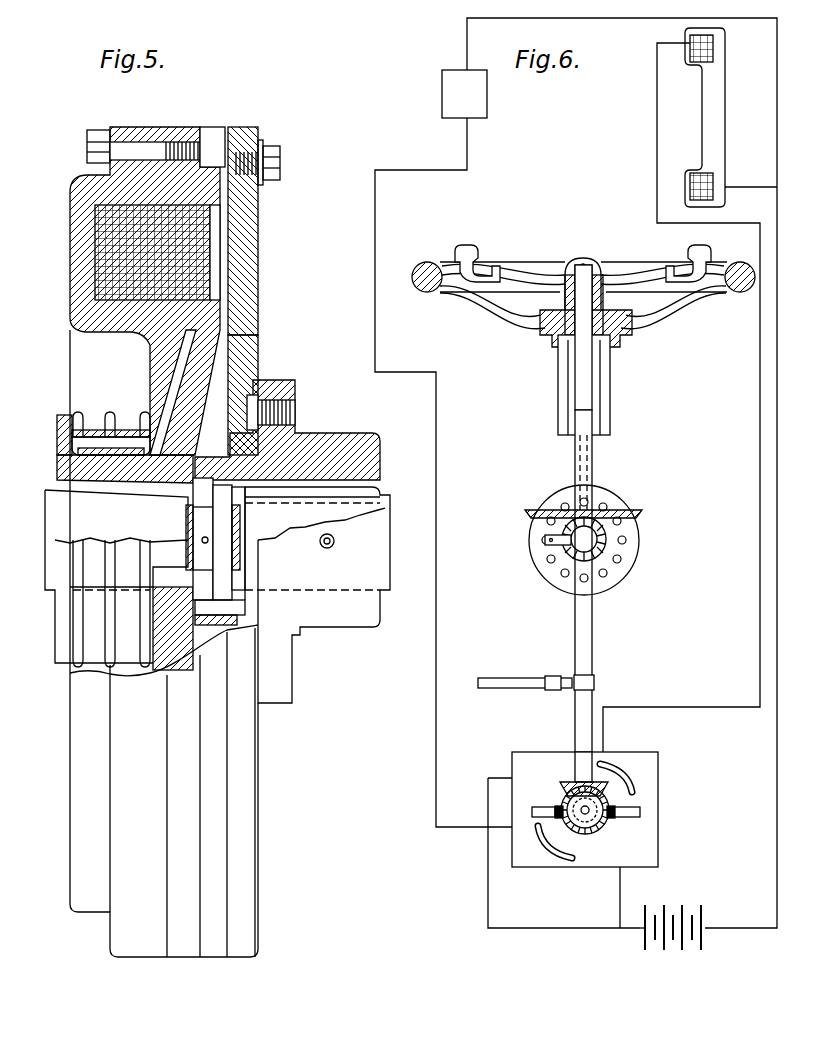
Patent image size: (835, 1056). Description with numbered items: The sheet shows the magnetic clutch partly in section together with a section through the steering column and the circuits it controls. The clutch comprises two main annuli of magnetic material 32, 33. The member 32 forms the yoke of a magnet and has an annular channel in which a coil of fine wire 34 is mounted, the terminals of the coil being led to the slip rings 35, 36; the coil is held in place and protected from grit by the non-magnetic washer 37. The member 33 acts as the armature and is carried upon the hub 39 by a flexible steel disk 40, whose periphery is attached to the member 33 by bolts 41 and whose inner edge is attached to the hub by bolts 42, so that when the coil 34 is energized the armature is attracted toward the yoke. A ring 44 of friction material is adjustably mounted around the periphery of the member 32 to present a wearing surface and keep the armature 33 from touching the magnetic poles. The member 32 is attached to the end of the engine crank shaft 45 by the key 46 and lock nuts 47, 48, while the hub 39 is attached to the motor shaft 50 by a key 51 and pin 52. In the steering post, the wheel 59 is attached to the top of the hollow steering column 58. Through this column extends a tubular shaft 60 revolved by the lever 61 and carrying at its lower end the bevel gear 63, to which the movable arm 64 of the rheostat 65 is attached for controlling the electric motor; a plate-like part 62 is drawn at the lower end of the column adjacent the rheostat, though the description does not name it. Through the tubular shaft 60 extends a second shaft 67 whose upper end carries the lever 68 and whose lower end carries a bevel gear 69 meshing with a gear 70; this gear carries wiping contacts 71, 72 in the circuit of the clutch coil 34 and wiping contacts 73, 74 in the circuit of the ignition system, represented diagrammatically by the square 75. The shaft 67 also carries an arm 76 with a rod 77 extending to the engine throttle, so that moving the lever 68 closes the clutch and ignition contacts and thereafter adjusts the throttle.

In FIG. 5, the annulus of magnetic material 32 is at (120, 170).
In FIG. 5, the annulus of magnetic material 33 is at (247, 130).
In FIG. 5, the coil of fine wire 34 is at (100, 224).
In FIG. 6, the coil of fine wire 34 is at (724, 50).
In FIG. 5, the slip ring 35 is at (82, 428).
In FIG. 5, the slip ring 36 is at (118, 432).
In FIG. 5, the non-magnetic washer 37 is at (217, 238).
In FIG. 5, the hub 39 is at (315, 462).
In FIG. 5, the flexible steel disk 40 is at (258, 282).
In FIG. 5, the bolt 41 is at (270, 160).
In FIG. 5, the bolt 42 is at (258, 413).
In FIG. 5, the ring of friction material 44 is at (212, 135).
In FIG. 5, the engine crank shaft 45 is at (56, 519).
In FIG. 5, the key 46 is at (66, 486).
In FIG. 5, the lock nut 47 is at (203, 587).
In FIG. 5, the lock nut 48 is at (222, 587).
In FIG. 5, the motor shaft 50 is at (392, 540).
In FIG. 5, the key 51 is at (370, 485).
In FIG. 5, the pin 52 is at (331, 547).
In FIG. 6, the steering column 58 is at (611, 424).
In FIG. 6, the wheel 59 is at (740, 292).
In FIG. 6, the tubular shaft 60 is at (595, 386).
In FIG. 6, the lever 61 is at (695, 248).
In FIG. 6, the plate 62 is at (622, 510).
In FIG. 6, the bevel gear 63 is at (609, 538).
In FIG. 6, the movable arm of the rheostat 64 is at (560, 543).
In FIG. 6, the rheostat 65 is at (620, 571).
In FIG. 6, the second shaft 67 is at (593, 660).
In FIG. 6, the lever 68 is at (522, 273).
In FIG. 6, the bevel gear 69 is at (608, 783).
In FIG. 6, the gear 70 is at (611, 804).
In FIG. 6, the wiping contact 71 is at (634, 792).
In FIG. 6, the wiping contact 72 is at (638, 813).
In FIG. 6, the wiping contact 73 is at (552, 812).
In FIG. 6, the wiping contact 74 is at (546, 843).
In FIG. 6, the ignition system 75 is at (474, 110).
In FIG. 6, the arm 76 is at (564, 681).
In FIG. 6, the rod 77 is at (516, 689).